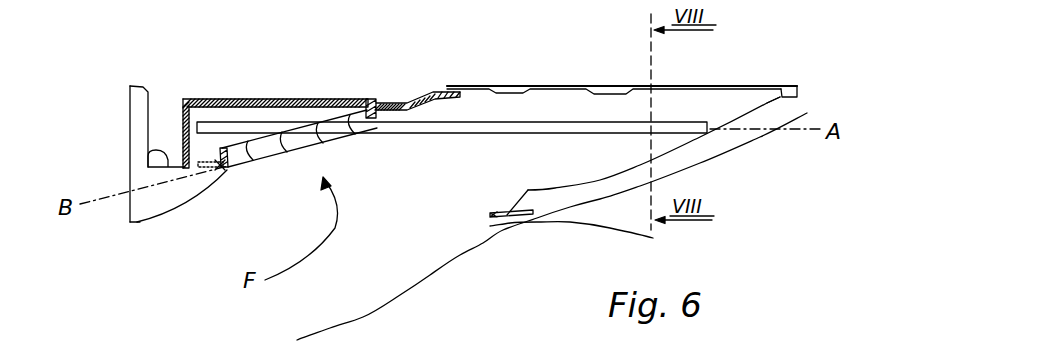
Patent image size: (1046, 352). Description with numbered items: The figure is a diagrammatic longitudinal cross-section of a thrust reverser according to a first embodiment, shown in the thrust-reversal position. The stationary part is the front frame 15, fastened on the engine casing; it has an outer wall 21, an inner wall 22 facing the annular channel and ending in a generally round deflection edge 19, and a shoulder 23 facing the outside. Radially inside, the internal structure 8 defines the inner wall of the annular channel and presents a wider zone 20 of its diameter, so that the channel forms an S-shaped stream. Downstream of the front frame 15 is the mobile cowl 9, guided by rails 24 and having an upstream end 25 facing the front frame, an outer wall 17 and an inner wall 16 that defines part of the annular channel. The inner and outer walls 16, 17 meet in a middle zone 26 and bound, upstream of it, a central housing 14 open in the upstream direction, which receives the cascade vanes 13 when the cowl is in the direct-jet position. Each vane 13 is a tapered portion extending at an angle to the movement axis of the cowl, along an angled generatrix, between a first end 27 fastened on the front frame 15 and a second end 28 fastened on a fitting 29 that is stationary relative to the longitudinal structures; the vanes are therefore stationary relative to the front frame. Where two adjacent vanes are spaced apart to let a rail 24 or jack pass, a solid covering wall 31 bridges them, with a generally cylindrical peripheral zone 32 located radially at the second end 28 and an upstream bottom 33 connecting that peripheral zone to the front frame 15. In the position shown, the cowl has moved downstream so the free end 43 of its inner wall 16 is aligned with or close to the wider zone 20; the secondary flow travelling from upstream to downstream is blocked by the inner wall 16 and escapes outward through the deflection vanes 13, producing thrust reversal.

The internal structure 8 is at (362, 316).
The mobile cowl 9 is at (513, 92).
The cascade vanes 13 is at (260, 163).
The central housing 14 is at (580, 170).
The front frame 15 is at (138, 121).
The inner wall 16 is at (533, 205).
The outer wall 17 is at (614, 68).
The deflection edge 19 is at (180, 207).
The wider zone 20 is at (451, 239).
The outer wall 21 is at (133, 86).
The inner wall 22 is at (136, 223).
The shoulder 23 is at (146, 158).
The rails 24 is at (387, 134).
The upstream end 25 is at (470, 84).
The middle zone 26 is at (794, 102).
The first end 27 is at (228, 172).
The second end 28 is at (371, 99).
The fitting 29 is at (425, 97).
The covering wall 31 is at (275, 76).
The peripheral zone 32 is at (272, 98).
The upstream bottom 33 is at (183, 117).
The free end 43 is at (497, 224).